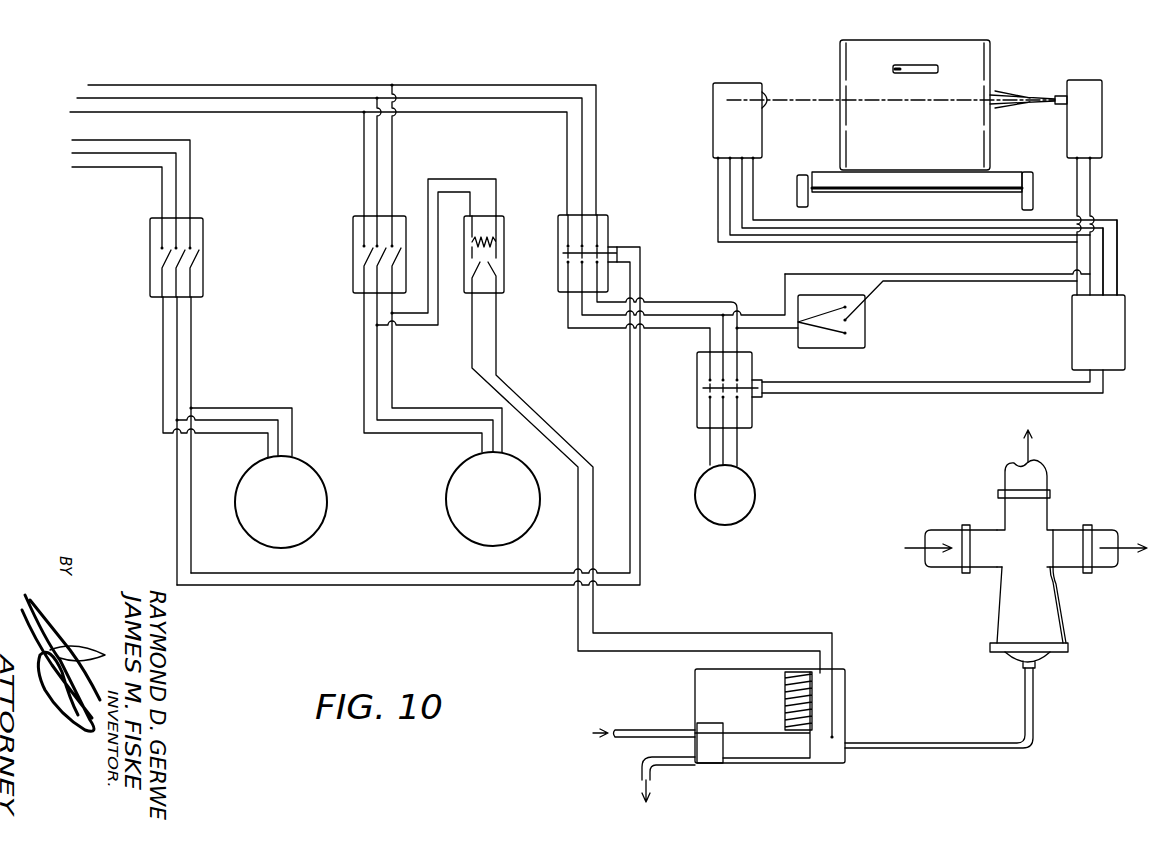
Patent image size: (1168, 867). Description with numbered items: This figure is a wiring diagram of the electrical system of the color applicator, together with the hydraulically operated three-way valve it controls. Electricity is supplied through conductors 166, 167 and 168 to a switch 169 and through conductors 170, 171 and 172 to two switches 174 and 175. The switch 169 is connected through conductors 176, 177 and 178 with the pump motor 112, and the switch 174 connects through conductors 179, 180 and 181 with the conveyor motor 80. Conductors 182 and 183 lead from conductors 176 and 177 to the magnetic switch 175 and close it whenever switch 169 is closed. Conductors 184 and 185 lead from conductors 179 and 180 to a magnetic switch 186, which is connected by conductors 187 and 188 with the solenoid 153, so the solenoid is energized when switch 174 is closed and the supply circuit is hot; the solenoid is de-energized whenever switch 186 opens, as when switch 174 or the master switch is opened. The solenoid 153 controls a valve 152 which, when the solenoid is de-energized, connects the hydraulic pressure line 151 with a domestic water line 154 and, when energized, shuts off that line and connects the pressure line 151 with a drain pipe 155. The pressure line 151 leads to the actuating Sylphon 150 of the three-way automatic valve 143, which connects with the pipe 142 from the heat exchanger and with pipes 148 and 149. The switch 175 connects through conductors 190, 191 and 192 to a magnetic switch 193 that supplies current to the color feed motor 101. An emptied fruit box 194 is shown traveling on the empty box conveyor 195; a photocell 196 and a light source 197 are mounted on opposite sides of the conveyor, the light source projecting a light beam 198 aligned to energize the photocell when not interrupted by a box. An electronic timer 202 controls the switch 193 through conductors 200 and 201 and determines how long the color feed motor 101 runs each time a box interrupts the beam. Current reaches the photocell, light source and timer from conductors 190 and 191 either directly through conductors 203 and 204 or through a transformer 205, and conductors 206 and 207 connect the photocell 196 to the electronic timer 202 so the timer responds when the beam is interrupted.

The conductor 170 is at (88, 85).
The conductor 171 is at (77, 98).
The conductor 172 is at (70, 112).
The conductor 166 is at (72, 140).
The conductor 167 is at (72, 153).
The conductor 168 is at (72, 167).
The switch 169 is at (195, 240).
The switch 174 is at (357, 230).
The magnetic switch 175 is at (605, 230).
The conductor 176 is at (191, 335).
The conductor 177 is at (177, 366).
The conductor 178 is at (163, 380).
The conductor 179 is at (392, 352).
The conductor 180 is at (377, 373).
The conductor 181 is at (364, 393).
The conductor 182 is at (340, 573).
The conductor 183 is at (372, 585).
The conductor 184 is at (448, 179).
The conductor 185 is at (462, 190).
The magnetic switch 186 is at (500, 232).
The conductor 187 is at (500, 388).
The conductor 188 is at (510, 393).
The conductor 190 is at (652, 302).
The conductor 191 is at (676, 315).
The conductor 192 is at (694, 328).
The magnetic switch 193 is at (745, 412).
The color feed motor 101 is at (738, 514).
The pump motor 112 is at (292, 534).
The conveyor motor 80 is at (502, 530).
The box 194 is at (990, 62).
The empty box conveyor 195 is at (1008, 178).
The photocell 196 is at (733, 92).
The light source 197 is at (1084, 80).
The light beam 198 is at (1010, 96).
The conductor 200 is at (930, 393).
The conductor 201 is at (930, 382).
The electronic timer 202 is at (1075, 325).
The conductor 203 is at (935, 274).
The conductor 204 is at (935, 281).
The transformer 205 is at (865, 322).
The conductor 206 is at (1103, 242).
The conductor 207 is at (1117, 252).
The pipe 142 is at (945, 535).
The three-way automatic valve 143 is at (1015, 562).
The pipe 148 is at (1040, 480).
The pipe 149 is at (1092, 533).
The actuating Sylphon 150 is at (1055, 610).
The hydraulic pressure line 151 is at (930, 740).
The valve 152 is at (752, 750).
The solenoid 153 is at (785, 705).
The domestic water line 154 is at (660, 730).
The drain pipe 155 is at (642, 762).